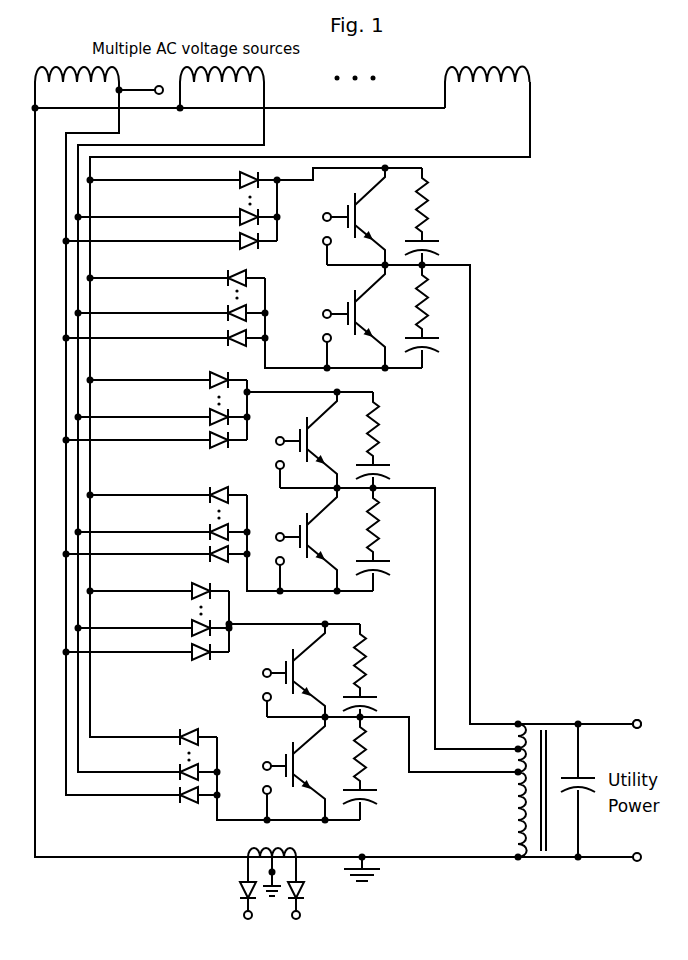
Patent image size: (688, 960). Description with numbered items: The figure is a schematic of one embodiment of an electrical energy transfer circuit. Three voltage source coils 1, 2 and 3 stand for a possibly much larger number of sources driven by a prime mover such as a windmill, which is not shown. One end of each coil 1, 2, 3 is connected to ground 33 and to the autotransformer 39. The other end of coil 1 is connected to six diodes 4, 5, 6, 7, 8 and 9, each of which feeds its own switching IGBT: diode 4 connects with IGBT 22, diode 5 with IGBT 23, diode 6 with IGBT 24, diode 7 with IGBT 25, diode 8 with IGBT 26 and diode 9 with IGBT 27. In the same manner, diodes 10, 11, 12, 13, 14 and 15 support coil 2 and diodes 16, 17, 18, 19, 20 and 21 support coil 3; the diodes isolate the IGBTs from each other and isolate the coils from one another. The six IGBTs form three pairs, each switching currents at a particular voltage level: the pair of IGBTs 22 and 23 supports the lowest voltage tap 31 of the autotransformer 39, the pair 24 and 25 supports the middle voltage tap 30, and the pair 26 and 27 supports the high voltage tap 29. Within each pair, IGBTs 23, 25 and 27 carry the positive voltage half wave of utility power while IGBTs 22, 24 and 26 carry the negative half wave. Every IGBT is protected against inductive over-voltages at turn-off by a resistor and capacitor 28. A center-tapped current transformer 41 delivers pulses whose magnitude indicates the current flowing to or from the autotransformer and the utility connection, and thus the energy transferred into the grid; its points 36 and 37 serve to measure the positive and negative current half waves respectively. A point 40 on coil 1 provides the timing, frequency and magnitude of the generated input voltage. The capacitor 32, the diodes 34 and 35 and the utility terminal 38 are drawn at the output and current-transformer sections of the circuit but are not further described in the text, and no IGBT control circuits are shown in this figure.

The voltage source coil 1 is at (89, 87).
The voltage source coil 2 is at (228, 87).
The voltage source coil 3 is at (499, 87).
The diode 4 is at (180, 800).
The diode 5 is at (192, 657).
The diode 6 is at (210, 559).
The diode 7 is at (210, 445).
The diode 8 is at (228, 343).
The diode 9 is at (240, 245).
The diode 10 is at (181, 769).
The diode 11 is at (192, 626).
The diode 12 is at (210, 529).
The diode 13 is at (210, 415).
The diode 14 is at (228, 311).
The diode 15 is at (241, 217).
The diode 16 is at (181, 735).
The diode 17 is at (192, 590).
The diode 18 is at (210, 493).
The diode 19 is at (210, 379).
The diode 20 is at (228, 276).
The diode 21 is at (241, 180).
The IGBT 22 is at (297, 766).
The IGBT 23 is at (297, 670).
The IGBT 24 is at (311, 536).
The IGBT 25 is at (311, 441).
The IGBT 26 is at (358, 313).
The IGBT 27 is at (360, 214).
The resistor and capacitor 28 is at (425, 227).
The high voltage tap 29 is at (516, 724).
The middle voltage tap 30 is at (516, 749).
The lowest voltage tap 31 is at (516, 772).
The output filter capacitor 32 is at (579, 779).
The ground 33 is at (375, 869).
The diode 34 is at (240, 889).
The diode 35 is at (304, 889).
The point of the current transformer 36 is at (245, 924).
The point of the current transformer 37 is at (293, 924).
The utility power output terminal 38 is at (642, 728).
The autotransformer 39 is at (546, 818).
The point of coil 1 40 is at (159, 86).
The current transformer 41 is at (264, 850).